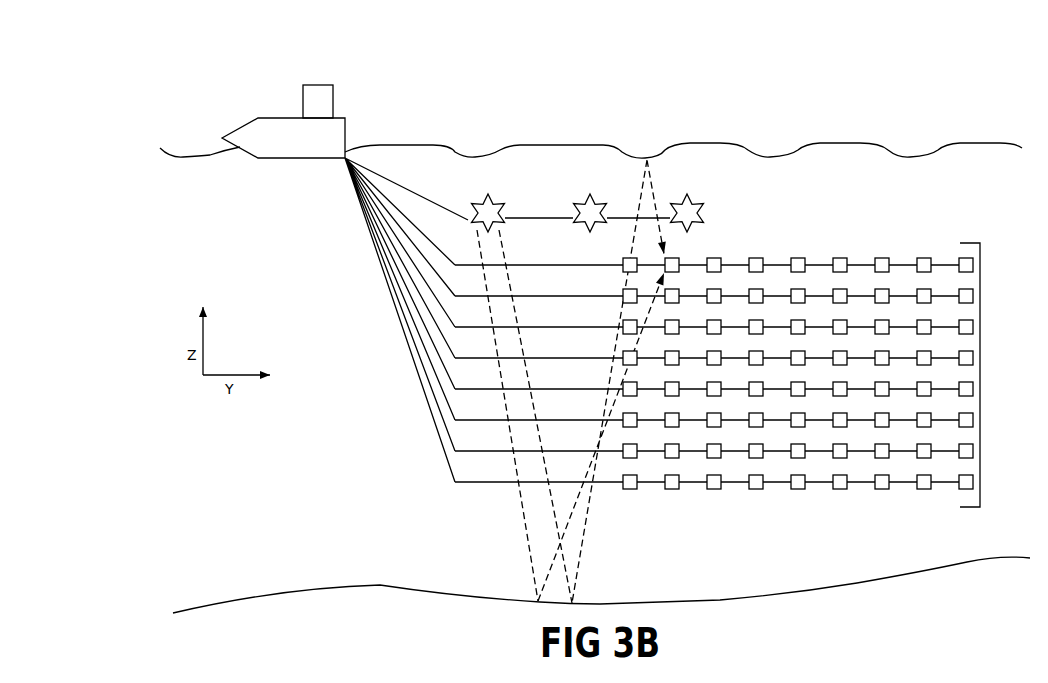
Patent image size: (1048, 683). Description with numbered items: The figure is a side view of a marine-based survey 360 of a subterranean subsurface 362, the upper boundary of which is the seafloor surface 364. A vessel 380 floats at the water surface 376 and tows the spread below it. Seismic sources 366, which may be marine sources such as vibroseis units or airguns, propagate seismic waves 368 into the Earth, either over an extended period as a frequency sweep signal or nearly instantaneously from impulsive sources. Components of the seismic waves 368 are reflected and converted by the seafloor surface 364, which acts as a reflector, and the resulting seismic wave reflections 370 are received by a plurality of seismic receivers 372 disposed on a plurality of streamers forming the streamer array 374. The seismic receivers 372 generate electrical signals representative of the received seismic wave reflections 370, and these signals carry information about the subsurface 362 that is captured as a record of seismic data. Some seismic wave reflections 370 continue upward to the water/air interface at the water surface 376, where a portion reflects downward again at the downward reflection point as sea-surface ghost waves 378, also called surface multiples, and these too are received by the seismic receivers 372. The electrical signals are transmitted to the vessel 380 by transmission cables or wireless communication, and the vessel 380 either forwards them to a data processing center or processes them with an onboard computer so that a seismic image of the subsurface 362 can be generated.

The marine-based survey 360 is at (204, 76).
The vessel 380 is at (313, 85).
The water surface 376 is at (827, 143).
The seismic sources 366 is at (507, 218).
The sea-surface ghost waves 378 is at (652, 176).
The seismic waves 368 is at (503, 292).
The seismic wave reflections 370 is at (614, 357).
The seismic receivers 372 is at (924, 257).
The streamer array 374 is at (980, 372).
The seafloor surface 364 is at (860, 583).
The subterranean subsurface 362 is at (297, 636).